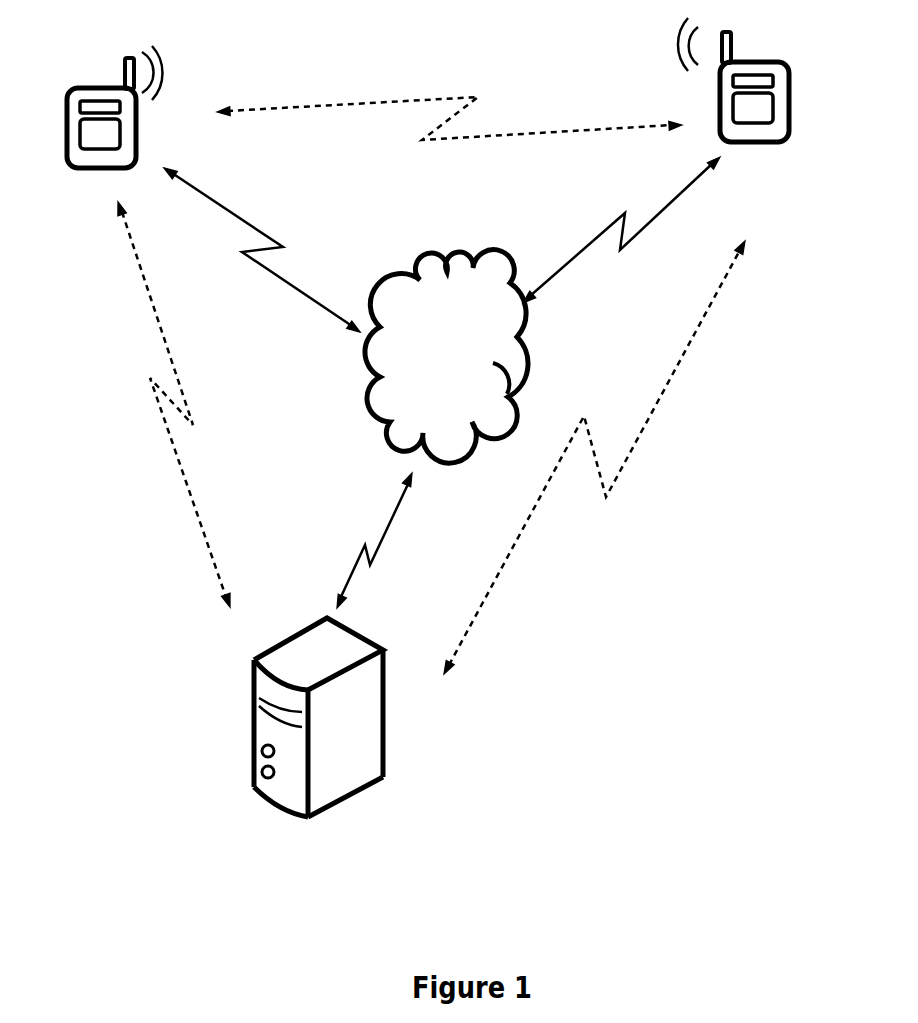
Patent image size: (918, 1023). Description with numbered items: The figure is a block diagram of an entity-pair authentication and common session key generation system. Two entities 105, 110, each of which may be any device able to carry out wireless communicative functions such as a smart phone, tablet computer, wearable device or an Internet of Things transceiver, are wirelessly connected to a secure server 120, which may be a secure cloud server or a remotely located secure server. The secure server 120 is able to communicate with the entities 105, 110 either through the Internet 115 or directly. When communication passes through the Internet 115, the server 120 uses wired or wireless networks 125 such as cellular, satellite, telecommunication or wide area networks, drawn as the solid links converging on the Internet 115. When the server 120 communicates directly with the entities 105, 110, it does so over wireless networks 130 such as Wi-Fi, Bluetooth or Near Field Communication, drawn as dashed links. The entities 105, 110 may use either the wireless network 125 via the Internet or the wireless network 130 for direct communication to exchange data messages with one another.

The entity 105 is at (78, 73).
The entity 110 is at (768, 150).
The Internet 115 is at (461, 361).
The secure server 120 is at (385, 740).
The wireless networks 125 is at (280, 240).
The wireless networks 130 is at (476, 87).